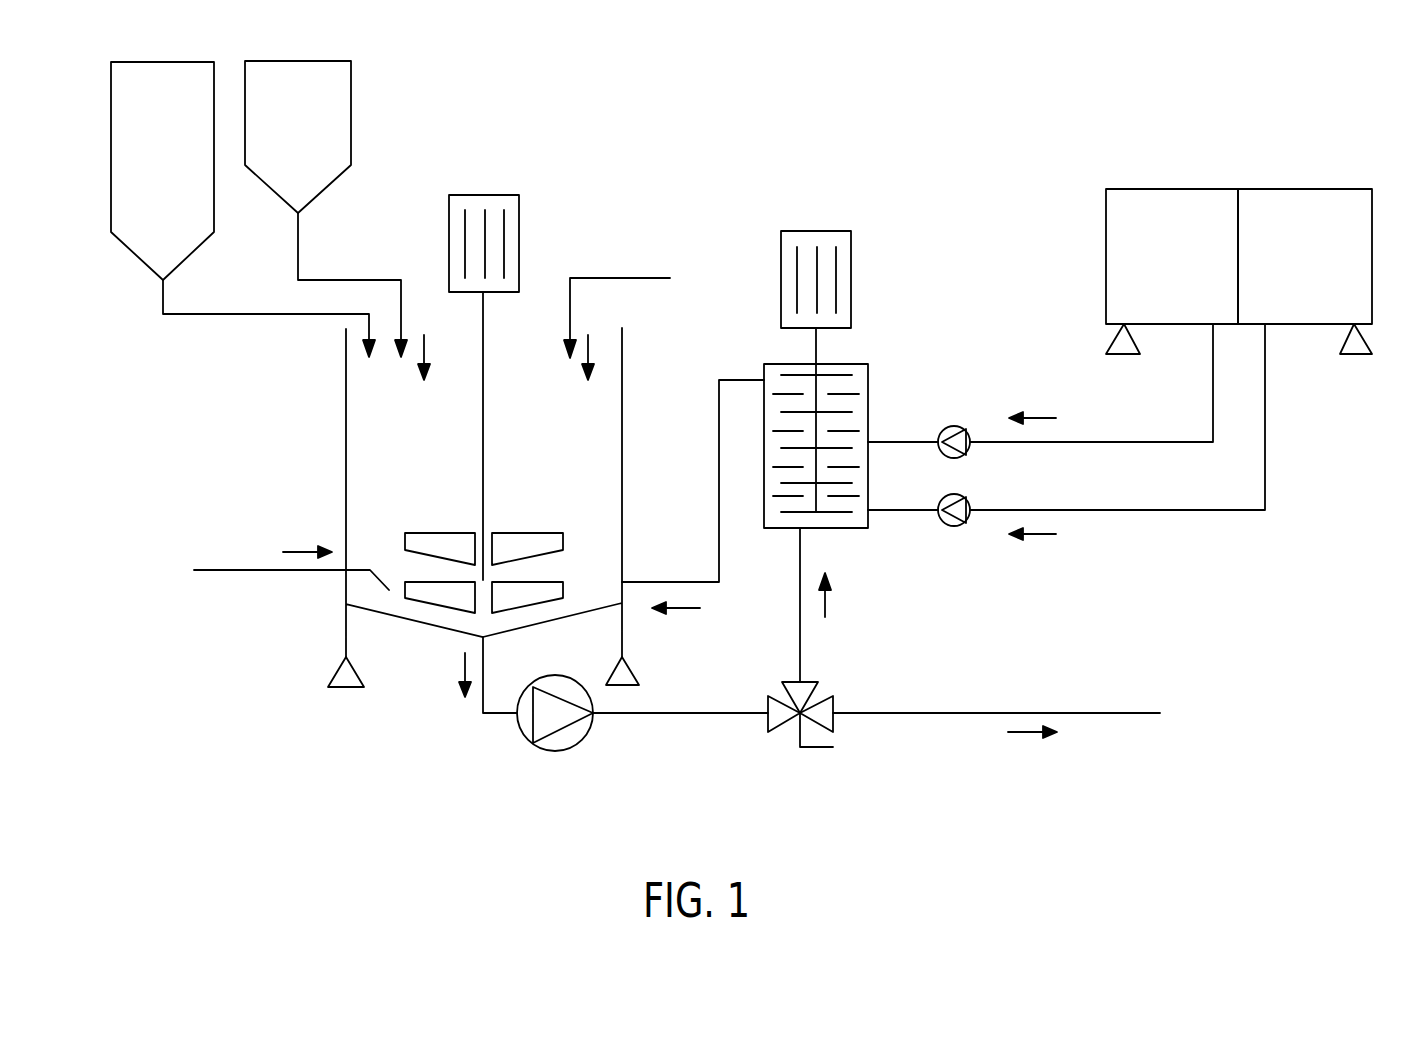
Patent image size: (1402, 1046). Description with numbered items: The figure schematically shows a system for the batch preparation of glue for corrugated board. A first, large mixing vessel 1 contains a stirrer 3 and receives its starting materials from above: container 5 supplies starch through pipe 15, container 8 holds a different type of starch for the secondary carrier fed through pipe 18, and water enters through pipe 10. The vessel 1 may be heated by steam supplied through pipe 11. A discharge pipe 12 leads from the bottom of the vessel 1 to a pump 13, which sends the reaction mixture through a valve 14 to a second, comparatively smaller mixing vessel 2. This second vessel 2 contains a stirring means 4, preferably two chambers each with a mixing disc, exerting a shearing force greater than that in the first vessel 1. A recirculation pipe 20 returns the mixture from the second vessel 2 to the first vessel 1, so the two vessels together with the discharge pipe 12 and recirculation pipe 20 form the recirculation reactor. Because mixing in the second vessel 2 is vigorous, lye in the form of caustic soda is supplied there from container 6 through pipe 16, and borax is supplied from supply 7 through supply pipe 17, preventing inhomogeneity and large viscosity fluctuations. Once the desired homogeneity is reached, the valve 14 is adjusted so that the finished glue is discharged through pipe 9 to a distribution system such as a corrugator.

The first mixing vessel 1 is at (345, 450).
The second mixing vessel 2 is at (868, 377).
The stirrer 3 is at (483, 445).
The stirring means 4 is at (843, 528).
The container 5 is at (130, 215).
The container 6 is at (1300, 205).
The supply 7 is at (1180, 205).
The container 8 is at (317, 88).
The pipe 9 is at (1108, 712).
The pipe 10 is at (670, 280).
The pipe 11 is at (248, 570).
The discharge pipe 12 is at (677, 713).
The pump 13 is at (517, 732).
The valve 14 is at (820, 747).
The pipe 15 is at (233, 314).
The pipe 16 is at (1265, 448).
The supply pipe 17 is at (1178, 440).
The pipe 18 is at (393, 280).
The recirculation pipe 20 is at (719, 440).